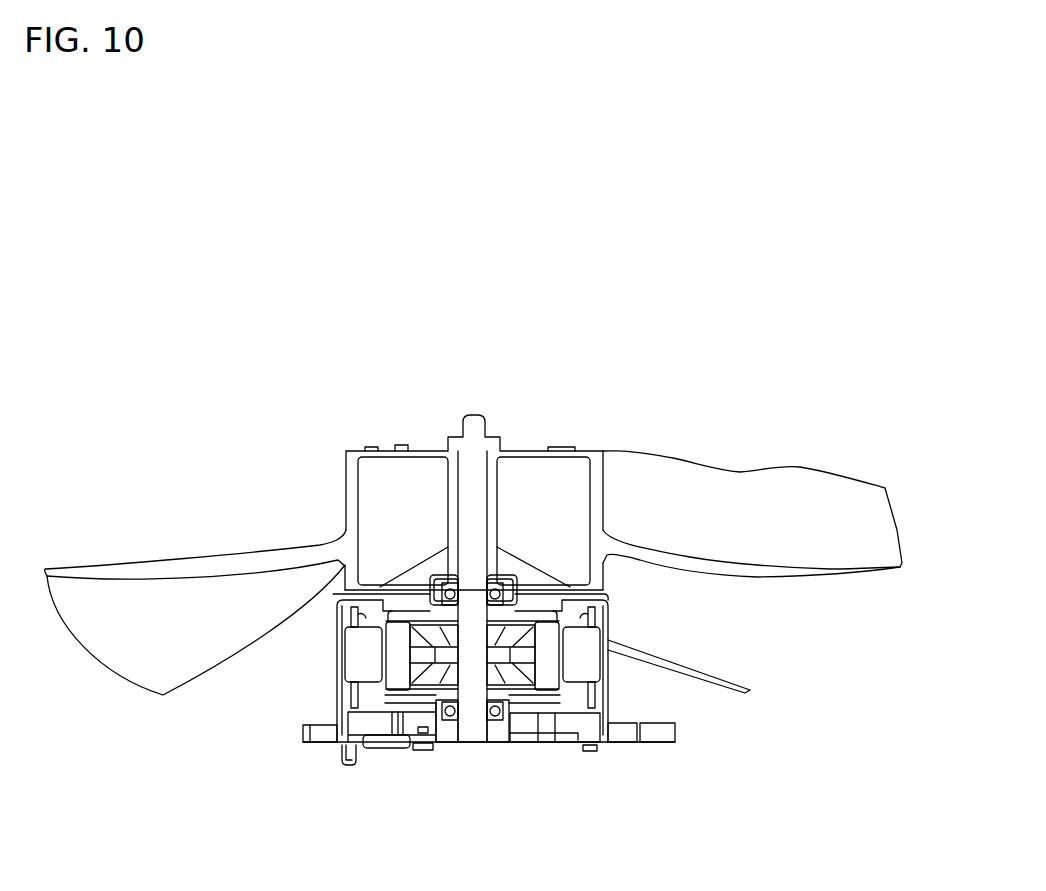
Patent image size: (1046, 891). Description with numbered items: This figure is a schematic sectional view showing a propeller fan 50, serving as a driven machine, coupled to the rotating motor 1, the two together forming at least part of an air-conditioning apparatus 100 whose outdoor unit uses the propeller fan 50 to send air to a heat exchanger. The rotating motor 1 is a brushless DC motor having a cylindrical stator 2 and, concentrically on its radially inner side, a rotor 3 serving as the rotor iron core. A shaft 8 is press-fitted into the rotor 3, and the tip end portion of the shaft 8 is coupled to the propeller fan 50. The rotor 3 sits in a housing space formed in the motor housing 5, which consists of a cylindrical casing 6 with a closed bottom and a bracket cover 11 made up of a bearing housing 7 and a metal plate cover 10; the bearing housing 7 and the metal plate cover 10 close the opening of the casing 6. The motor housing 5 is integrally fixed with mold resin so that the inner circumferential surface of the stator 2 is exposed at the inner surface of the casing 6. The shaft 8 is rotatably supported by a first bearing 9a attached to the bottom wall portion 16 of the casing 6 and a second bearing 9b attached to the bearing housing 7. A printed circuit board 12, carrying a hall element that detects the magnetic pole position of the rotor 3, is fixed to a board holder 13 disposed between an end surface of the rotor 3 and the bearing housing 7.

The air-conditioning apparatus 100 is at (345, 325).
The propeller fan 50 is at (595, 450).
The shaft 8 is at (478, 453).
The bottom wall portion 16 is at (352, 593).
The first bearing 9a is at (510, 597).
The second bearing 9b is at (503, 712).
The motor housing 5 is at (216, 662).
The casing 6 is at (342, 687).
The stator 2 is at (355, 648).
The rotor 3 is at (447, 677).
The bracket cover 11 is at (262, 690).
The bearing housing 7 is at (358, 723).
The metal plate cover 10 is at (313, 736).
The printed circuit board 12 is at (400, 705).
The board holder 13 is at (367, 733).
The rotating motor 1 is at (655, 793).